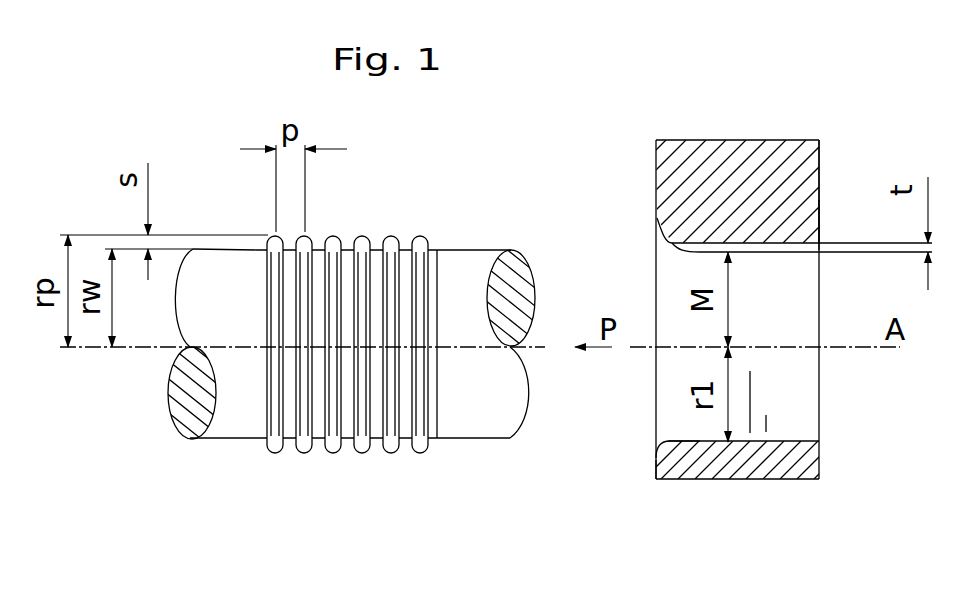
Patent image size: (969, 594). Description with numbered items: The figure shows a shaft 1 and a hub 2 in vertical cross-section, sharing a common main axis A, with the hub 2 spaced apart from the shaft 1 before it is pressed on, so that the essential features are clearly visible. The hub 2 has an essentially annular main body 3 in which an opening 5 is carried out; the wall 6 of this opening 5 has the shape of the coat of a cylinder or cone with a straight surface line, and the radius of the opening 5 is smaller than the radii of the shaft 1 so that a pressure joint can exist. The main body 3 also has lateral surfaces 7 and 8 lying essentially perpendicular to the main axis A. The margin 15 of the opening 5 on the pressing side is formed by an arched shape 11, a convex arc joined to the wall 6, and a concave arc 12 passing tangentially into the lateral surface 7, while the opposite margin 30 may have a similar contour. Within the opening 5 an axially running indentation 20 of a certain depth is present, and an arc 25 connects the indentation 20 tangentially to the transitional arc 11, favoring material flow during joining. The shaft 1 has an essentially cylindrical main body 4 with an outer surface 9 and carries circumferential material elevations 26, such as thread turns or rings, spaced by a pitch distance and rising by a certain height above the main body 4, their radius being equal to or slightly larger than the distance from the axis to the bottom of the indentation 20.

The shaft 1 is at (322, 337).
The hub 2 is at (747, 306).
The main body 3 is at (852, 553).
The main body 4 is at (450, 150).
The opening 5 is at (868, 435).
The wall 6 is at (868, 393).
The lateral surface 7 is at (603, 127).
The lateral surface 8 is at (905, 88).
The outer surface 9 is at (484, 336).
The arched shape 11 is at (768, 553).
The arc 12 is at (612, 451).
The margin 15 is at (612, 403).
The indentation 20 is at (780, 293).
The arc 25 is at (613, 229).
The circumferential material elevations 26 is at (325, 553).
The margin 30 is at (905, 145).